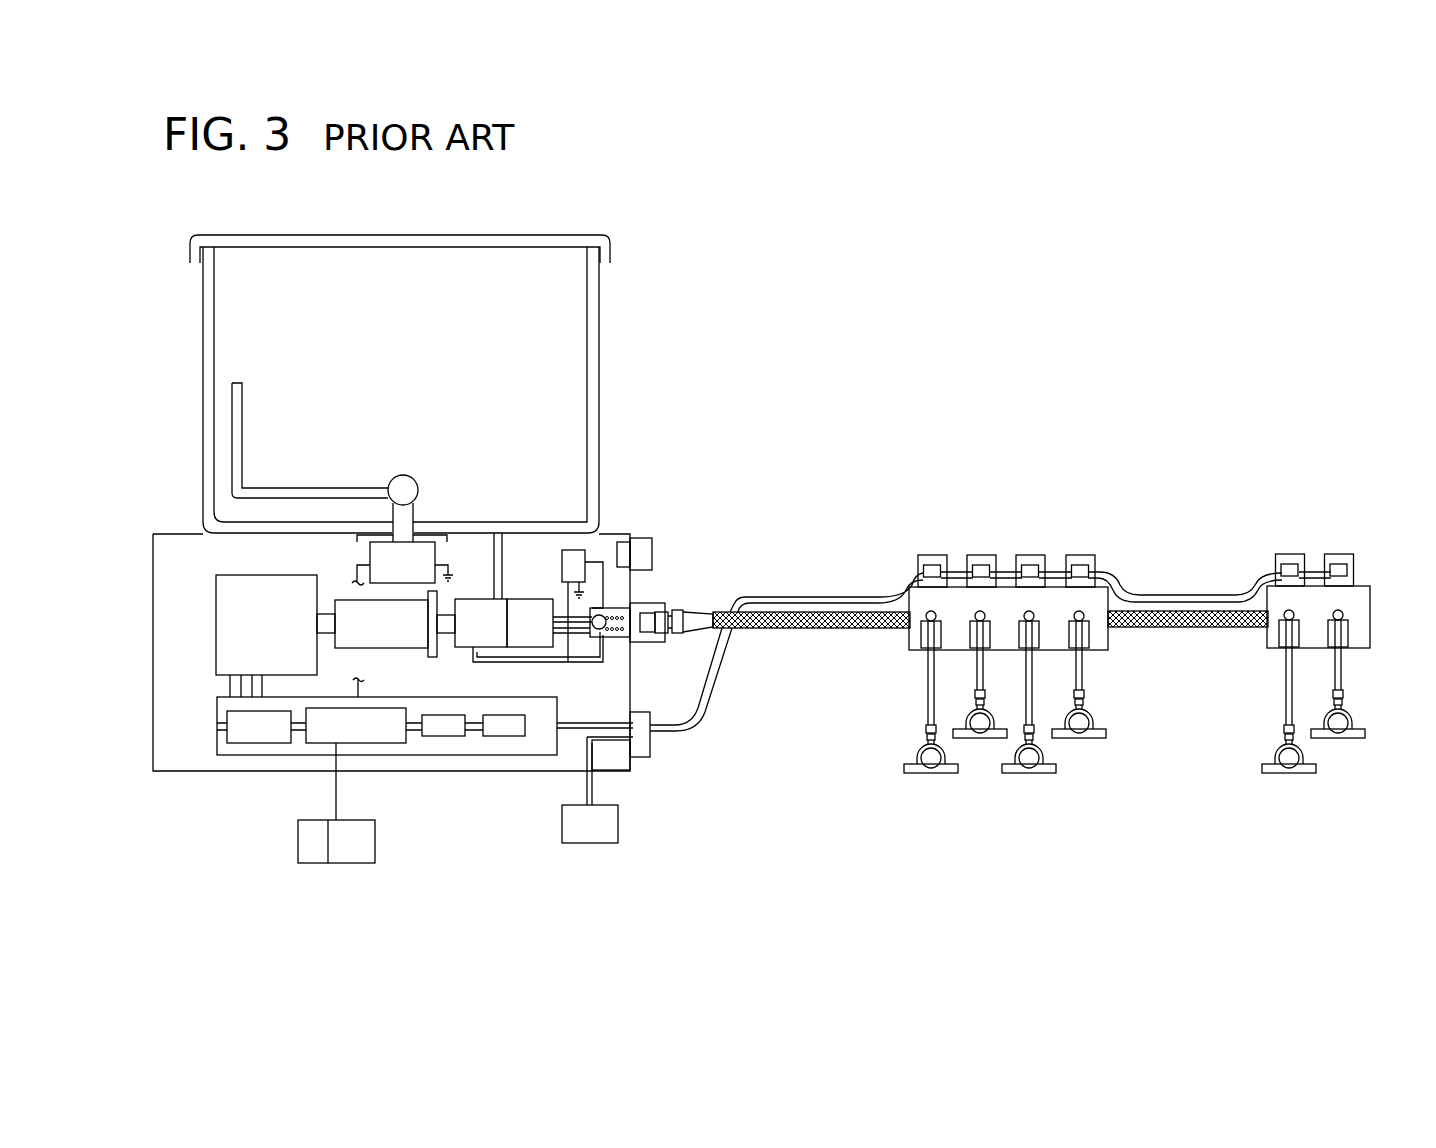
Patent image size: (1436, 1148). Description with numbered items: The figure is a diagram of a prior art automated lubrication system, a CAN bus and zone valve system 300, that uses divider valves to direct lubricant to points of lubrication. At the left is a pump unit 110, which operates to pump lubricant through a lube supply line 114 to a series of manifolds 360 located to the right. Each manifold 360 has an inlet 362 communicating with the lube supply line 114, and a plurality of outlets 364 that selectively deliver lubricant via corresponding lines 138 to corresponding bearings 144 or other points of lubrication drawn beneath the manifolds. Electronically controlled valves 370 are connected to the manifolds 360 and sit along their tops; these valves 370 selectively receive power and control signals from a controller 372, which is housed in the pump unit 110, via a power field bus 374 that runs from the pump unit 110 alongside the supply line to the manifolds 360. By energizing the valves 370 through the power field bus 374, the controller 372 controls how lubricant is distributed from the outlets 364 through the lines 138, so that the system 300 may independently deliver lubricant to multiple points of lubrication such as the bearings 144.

The pump unit 110 is at (600, 350).
The lube supply line 114 is at (750, 630).
The lines 138 is at (931, 700).
The bearings 144 is at (1282, 772).
The CAN bus and zone valve system 300 is at (1088, 385).
The manifolds 360 is at (1097, 602).
The inlet 362 is at (907, 640).
The outlets 364 is at (1033, 633).
The electronically controlled valves 370 is at (931, 555).
The controller 372 is at (440, 755).
The power field bus 374 is at (855, 595).